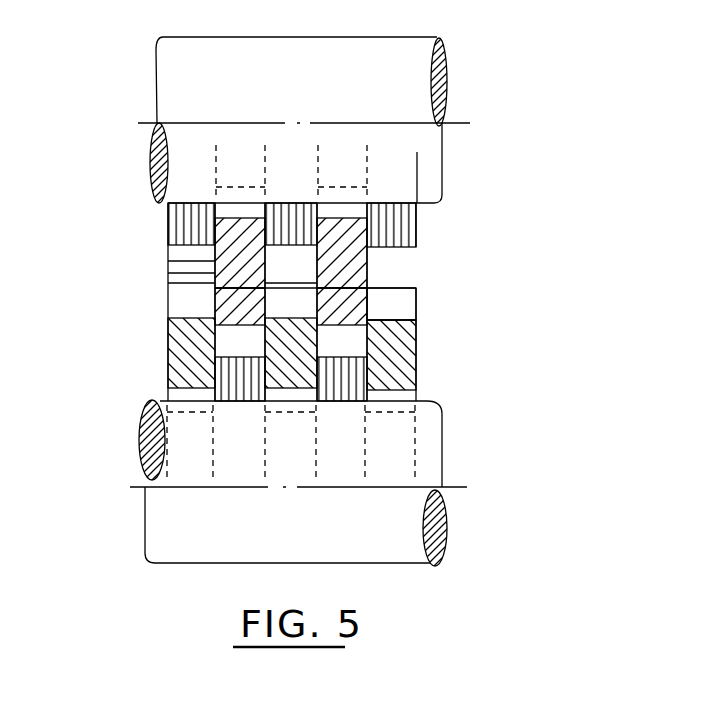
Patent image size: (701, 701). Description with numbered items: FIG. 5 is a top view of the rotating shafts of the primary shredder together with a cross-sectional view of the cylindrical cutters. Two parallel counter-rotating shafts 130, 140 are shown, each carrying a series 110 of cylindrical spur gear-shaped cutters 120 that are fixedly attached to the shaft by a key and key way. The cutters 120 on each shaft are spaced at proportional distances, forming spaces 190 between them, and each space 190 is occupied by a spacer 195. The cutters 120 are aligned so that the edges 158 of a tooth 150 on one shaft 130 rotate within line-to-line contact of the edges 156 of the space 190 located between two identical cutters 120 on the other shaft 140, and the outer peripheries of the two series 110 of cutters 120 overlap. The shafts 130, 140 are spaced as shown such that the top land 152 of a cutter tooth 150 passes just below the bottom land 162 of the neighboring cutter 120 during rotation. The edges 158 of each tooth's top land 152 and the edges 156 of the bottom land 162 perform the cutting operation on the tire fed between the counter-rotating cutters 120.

The series of cylindrical cutters 110 is at (134, 209).
The cylindrical cutter 120 is at (367, 262).
The shaft 130 is at (153, 92).
The shaft 140 is at (145, 516).
The tooth 150 is at (367, 281).
The top land 152 is at (367, 339).
The edges of space 156 is at (212, 317).
The edges of tooth 158 is at (222, 293).
The bottom land 162 is at (393, 316).
The space 190 is at (272, 249).
The spacer 195 is at (168, 273).